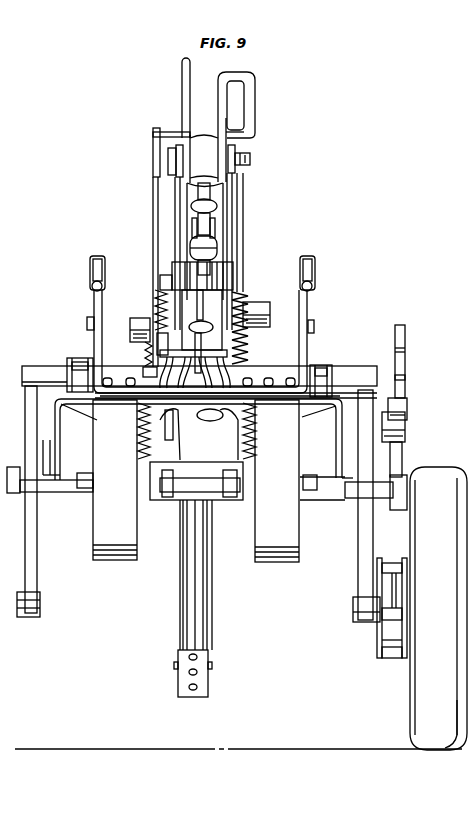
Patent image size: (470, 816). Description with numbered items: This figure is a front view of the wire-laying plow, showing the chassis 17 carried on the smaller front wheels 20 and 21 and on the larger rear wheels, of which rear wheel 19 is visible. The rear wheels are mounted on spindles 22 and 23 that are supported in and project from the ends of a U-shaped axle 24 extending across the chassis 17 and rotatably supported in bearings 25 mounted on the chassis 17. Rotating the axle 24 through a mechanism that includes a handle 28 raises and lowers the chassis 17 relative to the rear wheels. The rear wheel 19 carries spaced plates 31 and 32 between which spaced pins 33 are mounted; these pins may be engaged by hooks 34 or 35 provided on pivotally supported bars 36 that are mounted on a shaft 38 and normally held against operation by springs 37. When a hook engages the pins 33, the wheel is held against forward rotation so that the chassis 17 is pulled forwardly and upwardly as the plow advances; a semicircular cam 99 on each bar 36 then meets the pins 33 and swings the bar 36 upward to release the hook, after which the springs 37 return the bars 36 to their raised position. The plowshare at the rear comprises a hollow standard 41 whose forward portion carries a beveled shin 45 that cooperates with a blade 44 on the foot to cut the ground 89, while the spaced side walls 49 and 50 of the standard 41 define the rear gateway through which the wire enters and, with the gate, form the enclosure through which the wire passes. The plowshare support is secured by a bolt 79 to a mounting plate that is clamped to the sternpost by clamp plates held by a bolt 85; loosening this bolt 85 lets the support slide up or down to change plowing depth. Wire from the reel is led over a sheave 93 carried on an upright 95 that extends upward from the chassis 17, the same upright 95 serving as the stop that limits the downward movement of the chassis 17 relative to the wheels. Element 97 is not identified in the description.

The chassis 17 is at (360, 455).
The rear wheel 19 is at (410, 728).
The front wheel 20 is at (112, 561).
The front wheel 21 is at (278, 563).
The spindle 22 is at (40, 610).
The spindle 23 is at (354, 610).
The U-shaped axle 24 is at (32, 372).
The bearing 25 is at (72, 360).
The handle 28 is at (218, 205).
The plate 31 is at (376, 632).
The plate 32 is at (405, 660).
The pin 33 is at (392, 562).
The hook 34 is at (406, 377).
The hook 35 is at (406, 348).
The bar 36 is at (402, 403).
The spring 37 is at (162, 290).
The shaft 38 is at (332, 500).
The hollow standard 41 is at (212, 560).
The blade 44 is at (205, 680).
The beveled shin 45 is at (196, 615).
The side wall 49 is at (203, 592).
The side wall 50 is at (181, 592).
The bolt 79 is at (143, 322).
The bolt 85 is at (260, 302).
The ground 89 is at (240, 748).
The sheave 93 is at (218, 152).
The upright 95 is at (188, 237).
The standard 97 is at (153, 207).
The semicircular cam 99 is at (397, 427).